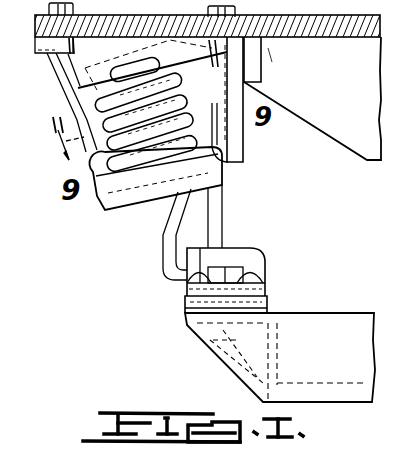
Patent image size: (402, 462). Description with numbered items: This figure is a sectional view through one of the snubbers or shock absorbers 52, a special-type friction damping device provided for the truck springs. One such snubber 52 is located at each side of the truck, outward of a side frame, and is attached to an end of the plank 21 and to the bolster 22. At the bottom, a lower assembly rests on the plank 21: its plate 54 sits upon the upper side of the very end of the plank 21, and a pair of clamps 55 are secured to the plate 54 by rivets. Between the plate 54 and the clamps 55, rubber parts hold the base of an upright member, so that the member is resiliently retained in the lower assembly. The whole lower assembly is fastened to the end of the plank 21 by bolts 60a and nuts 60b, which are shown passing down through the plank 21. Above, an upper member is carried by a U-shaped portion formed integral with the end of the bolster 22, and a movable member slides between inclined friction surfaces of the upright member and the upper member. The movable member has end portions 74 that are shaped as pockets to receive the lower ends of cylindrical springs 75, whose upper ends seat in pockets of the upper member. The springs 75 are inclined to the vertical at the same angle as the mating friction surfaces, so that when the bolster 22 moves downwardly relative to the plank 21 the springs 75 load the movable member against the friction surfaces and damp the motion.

The plank 21 is at (338, 316).
The bolster 22 is at (365, 68).
The snubber or shock absorber 52 is at (150, 254).
The plate 54 is at (268, 300).
The clamps 55 is at (264, 259).
The bolts 60a is at (235, 273).
The nuts 60b is at (212, 336).
The end portions of movable member 74 is at (110, 204).
The cylindrical springs 75 is at (78, 111).